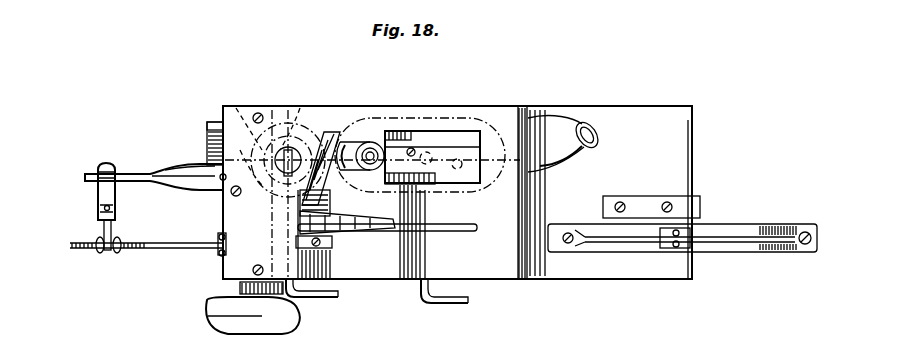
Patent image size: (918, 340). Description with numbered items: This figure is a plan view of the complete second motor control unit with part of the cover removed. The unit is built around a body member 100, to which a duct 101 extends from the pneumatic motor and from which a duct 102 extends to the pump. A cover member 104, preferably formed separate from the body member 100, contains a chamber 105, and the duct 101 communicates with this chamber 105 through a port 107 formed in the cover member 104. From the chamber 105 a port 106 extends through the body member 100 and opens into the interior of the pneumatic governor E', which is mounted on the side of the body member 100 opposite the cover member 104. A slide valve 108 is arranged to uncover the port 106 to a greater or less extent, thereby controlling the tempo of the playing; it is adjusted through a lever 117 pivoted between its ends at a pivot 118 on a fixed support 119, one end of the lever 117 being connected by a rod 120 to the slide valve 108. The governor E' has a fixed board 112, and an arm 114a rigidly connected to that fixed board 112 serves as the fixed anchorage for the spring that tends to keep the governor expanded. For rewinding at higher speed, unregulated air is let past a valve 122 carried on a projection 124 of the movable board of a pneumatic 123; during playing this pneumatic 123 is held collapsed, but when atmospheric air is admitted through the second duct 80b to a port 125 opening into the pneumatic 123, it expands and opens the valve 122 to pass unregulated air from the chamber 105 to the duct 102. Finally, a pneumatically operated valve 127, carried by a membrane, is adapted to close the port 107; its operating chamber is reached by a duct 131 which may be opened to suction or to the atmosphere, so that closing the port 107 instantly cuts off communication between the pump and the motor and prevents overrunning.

The body member 100 is at (506, 270).
The duct 101 is at (297, 313).
The duct 102 is at (573, 158).
The cover member 104 is at (318, 122).
The chamber 105 is at (478, 128).
The port 106 is at (342, 292).
The port 107 is at (226, 98).
The slide valve 108 is at (356, 248).
The fixed board 112 is at (690, 172).
The arm 114a is at (753, 229).
The lever 117 is at (98, 197).
The pivot 118 is at (112, 237).
The fixed support 119 is at (138, 171).
The rod 120 is at (169, 250).
The valve 122 is at (363, 140).
The pneumatic 123 is at (549, 132).
The projection 124 is at (399, 146).
The port 125 is at (464, 192).
The pneumatically operated valve 127 is at (294, 150).
The duct 131 is at (217, 238).
The second duct 80b is at (421, 302).
The pneumatic governor E' is at (690, 98).